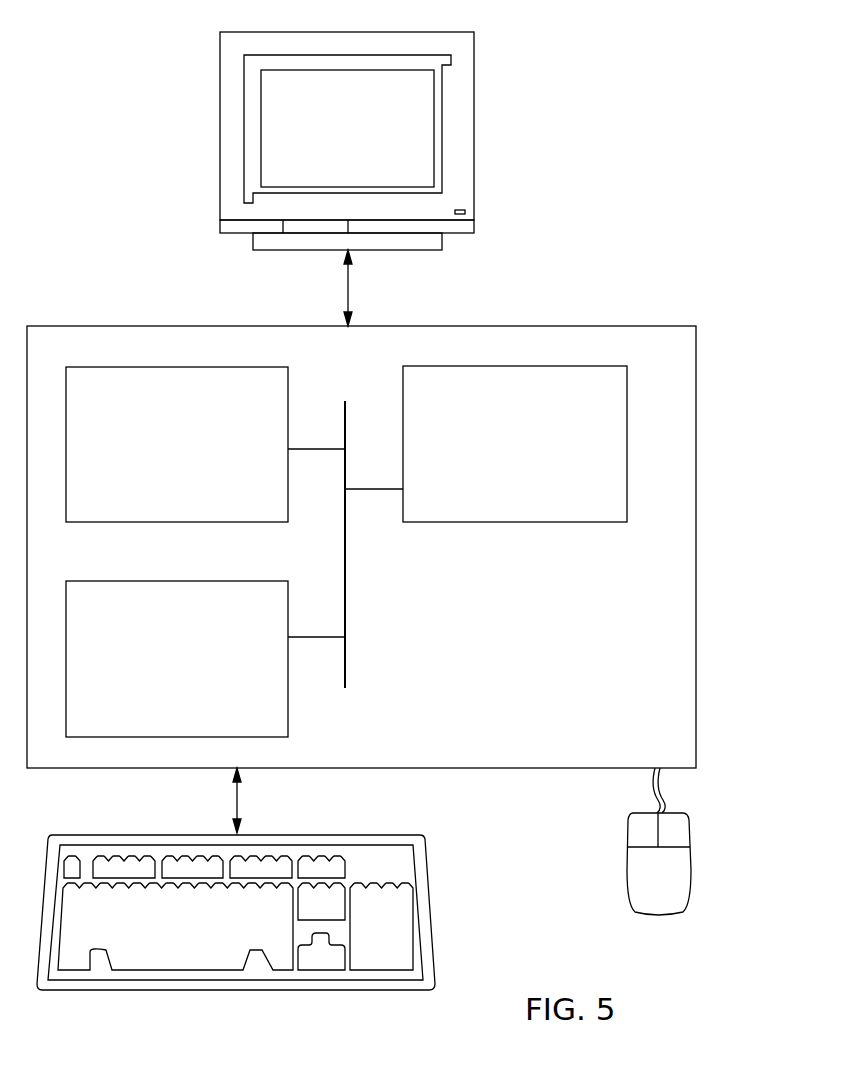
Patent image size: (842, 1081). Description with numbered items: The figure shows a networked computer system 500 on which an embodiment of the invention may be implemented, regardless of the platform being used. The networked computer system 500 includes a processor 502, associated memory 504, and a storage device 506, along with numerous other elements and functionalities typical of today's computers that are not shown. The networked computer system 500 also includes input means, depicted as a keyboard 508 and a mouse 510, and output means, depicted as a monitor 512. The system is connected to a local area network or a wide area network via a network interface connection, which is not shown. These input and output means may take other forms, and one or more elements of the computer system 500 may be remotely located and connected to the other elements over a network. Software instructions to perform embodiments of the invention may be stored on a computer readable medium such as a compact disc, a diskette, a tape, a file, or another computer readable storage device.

The networked computer system 500 is at (712, 185).
The processor 502 is at (516, 456).
The associated memory 504 is at (156, 454).
The storage device 506 is at (152, 671).
The keyboard 508 is at (147, 951).
The mouse 510 is at (637, 886).
The monitor 512 is at (327, 144).